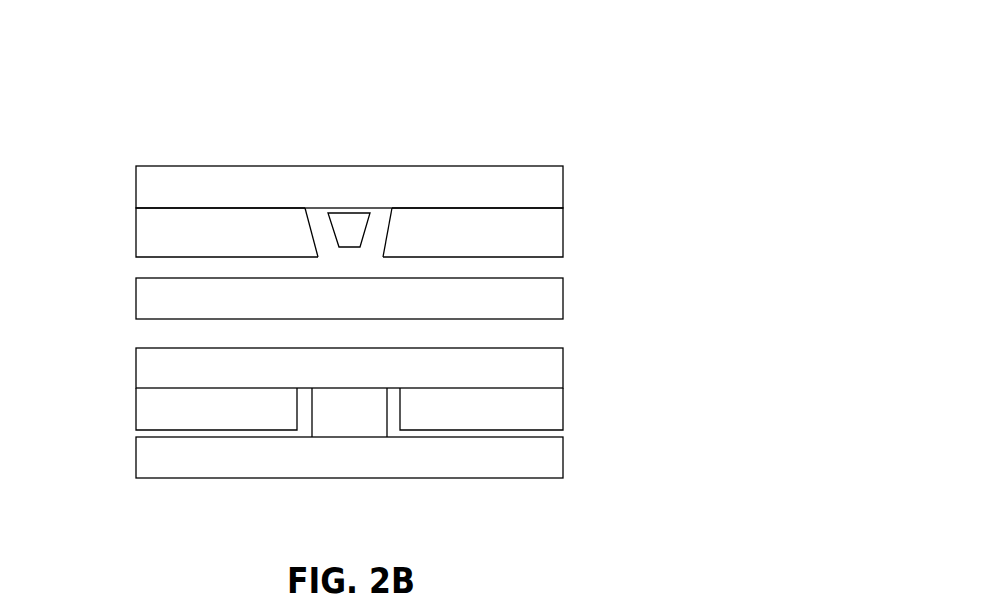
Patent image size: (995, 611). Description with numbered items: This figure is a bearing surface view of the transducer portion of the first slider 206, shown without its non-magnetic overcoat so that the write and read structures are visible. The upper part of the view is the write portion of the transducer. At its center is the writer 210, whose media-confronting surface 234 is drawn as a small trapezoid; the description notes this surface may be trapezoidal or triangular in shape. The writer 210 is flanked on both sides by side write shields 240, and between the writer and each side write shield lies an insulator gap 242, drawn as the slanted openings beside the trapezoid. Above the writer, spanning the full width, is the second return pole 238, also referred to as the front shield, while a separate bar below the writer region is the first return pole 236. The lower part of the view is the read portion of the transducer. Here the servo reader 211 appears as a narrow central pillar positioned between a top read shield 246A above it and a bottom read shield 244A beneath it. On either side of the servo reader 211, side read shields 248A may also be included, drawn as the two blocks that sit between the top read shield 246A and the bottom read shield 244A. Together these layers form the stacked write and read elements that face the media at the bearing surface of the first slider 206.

The first slider 206 is at (606, 90).
The writer 210 is at (384, 229).
The servo reader 211 is at (363, 423).
The media-confronting surface 234 is at (348, 223).
The first return pole 236 is at (367, 309).
The second return pole 238 is at (535, 193).
The side write shields 240 is at (153, 228).
The insulator gaps 242 is at (318, 230).
The bottom read shield 244A is at (546, 458).
The top read shield 246A is at (546, 369).
The side read shields 248A is at (150, 410).